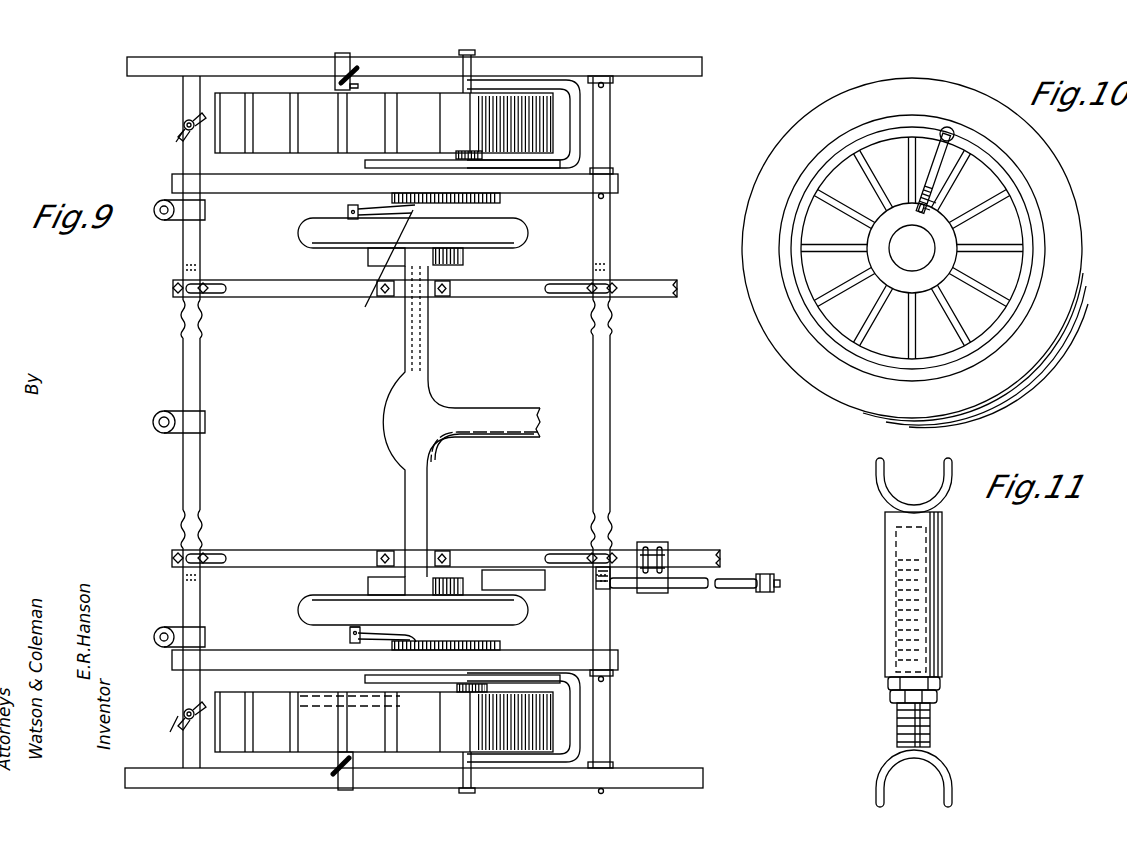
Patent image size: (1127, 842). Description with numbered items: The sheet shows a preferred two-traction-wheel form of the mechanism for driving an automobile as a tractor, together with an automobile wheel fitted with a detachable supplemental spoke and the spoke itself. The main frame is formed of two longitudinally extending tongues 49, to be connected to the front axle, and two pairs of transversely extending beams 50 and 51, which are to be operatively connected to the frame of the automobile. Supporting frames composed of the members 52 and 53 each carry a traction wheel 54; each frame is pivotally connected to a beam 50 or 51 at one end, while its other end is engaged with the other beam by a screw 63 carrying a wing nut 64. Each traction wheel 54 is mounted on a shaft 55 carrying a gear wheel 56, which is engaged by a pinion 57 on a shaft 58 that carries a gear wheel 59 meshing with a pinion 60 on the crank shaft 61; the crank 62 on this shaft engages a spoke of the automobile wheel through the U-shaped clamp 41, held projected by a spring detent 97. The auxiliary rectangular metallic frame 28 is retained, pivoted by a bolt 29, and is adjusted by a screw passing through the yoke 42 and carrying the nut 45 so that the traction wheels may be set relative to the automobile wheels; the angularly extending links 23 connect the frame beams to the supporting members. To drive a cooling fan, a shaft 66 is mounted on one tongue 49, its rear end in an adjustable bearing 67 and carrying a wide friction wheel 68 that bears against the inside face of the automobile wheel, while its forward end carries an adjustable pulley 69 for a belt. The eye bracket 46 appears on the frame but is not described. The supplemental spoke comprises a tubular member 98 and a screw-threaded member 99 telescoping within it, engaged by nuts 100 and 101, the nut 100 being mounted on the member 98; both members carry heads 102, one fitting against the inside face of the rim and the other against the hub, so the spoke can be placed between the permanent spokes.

In FIG. 9, the angularly extending links 23 is at (612, 83).
In FIG. 9, the rectangular metallic frame 28 is at (565, 80).
In FIG. 9, the bolt 29 is at (472, 52).
In FIG. 9, the clamp 41 is at (348, 630).
In FIG. 9, the yoke 42 is at (338, 53).
In FIG. 9, the nut 45 is at (358, 72).
In FIG. 9, the eye bracket 46 is at (158, 432).
In FIG. 9, the tongues 49 is at (522, 297).
In FIG. 9, the transversely extending beams 50 is at (184, 240).
In FIG. 9, the transversely extending beams 51 is at (462, 150).
In FIG. 9, the supporting frame member 52 is at (268, 194).
In FIG. 9, the supporting frame member 53 is at (180, 72).
In FIG. 9, the traction wheel 54 is at (520, 130).
In FIG. 9, the shaft 55 is at (365, 163).
In FIG. 9, the gear wheel 56 is at (318, 700).
In FIG. 9, the pinion 57 is at (480, 684).
In FIG. 9, the shaft 58 is at (460, 203).
In FIG. 9, the gear wheel 59 is at (500, 200).
In FIG. 9, the pinion 60 is at (412, 203).
In FIG. 9, the crank shaft 61 is at (366, 306).
In FIG. 9, the crank 62 is at (368, 248).
In FIG. 9, the screw 63 is at (182, 127).
In FIG. 9, the wing nut 64 is at (180, 140).
In FIG. 9, the shaft 66 is at (688, 578).
In FIG. 9, the adjustable bearing 67 is at (652, 542).
In FIG. 9, the roller or friction wheel 68 is at (490, 570).
In FIG. 9, the pulley or roller 69 is at (764, 574).
In FIG. 9, the spring detent 97 is at (358, 643).
In FIG. 10, the tubular member 98 is at (928, 162).
In FIG. 11, the tubular member 98 is at (942, 548).
In FIG. 10, the screw-threaded member 99 is at (905, 195).
In FIG. 11, the screw-threaded member 99 is at (930, 738).
In FIG. 10, the nut 100 is at (934, 200).
In FIG. 11, the nut 100 is at (941, 683).
In FIG. 10, the nut 101 is at (932, 208).
In FIG. 11, the nut 101 is at (938, 698).
In FIG. 10, the heads 102 is at (950, 128).
In FIG. 11, the heads 102 is at (886, 488).